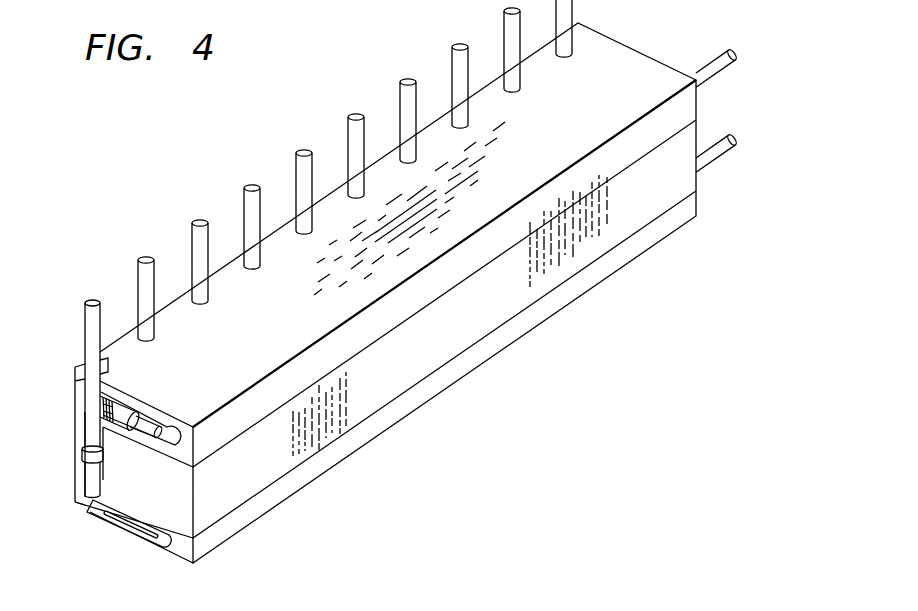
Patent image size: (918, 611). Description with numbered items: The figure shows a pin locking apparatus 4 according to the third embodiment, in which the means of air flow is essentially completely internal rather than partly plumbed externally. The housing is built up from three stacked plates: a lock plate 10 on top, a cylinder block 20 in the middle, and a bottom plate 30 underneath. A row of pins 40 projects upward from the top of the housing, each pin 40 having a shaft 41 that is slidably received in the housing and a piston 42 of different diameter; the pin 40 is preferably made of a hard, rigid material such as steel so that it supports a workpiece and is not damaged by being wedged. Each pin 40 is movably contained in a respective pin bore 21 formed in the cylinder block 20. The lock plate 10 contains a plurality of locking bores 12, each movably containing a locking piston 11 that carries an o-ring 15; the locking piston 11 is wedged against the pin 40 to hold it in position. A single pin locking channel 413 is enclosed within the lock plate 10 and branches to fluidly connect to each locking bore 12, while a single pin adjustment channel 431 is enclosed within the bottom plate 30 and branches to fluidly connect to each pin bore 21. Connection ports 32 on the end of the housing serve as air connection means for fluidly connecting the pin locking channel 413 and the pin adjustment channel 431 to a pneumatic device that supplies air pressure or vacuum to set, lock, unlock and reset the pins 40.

The pin locking apparatus 4 is at (205, 143).
The lock plate 10 is at (273, 403).
The locking piston 11 is at (133, 412).
The locking bore 12 is at (143, 442).
The o-ring 15 is at (112, 402).
The cylinder block 20 is at (258, 482).
The pin bore 21 is at (88, 480).
The bottom plate 30 is at (222, 535).
The connection port 32 is at (718, 68).
The pin 40 is at (79, 352).
The shaft 41 is at (89, 318).
The piston 42 is at (81, 457).
The pin locking channel 413 is at (167, 435).
The pin adjustment channel 431 is at (133, 523).